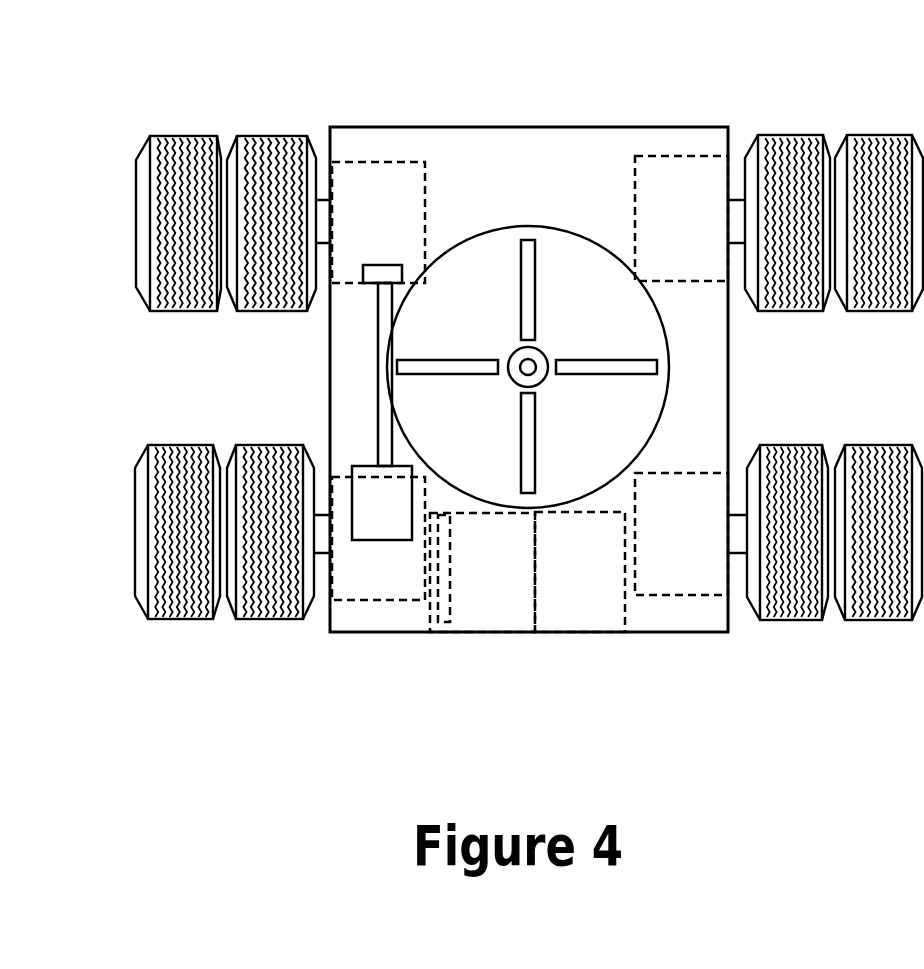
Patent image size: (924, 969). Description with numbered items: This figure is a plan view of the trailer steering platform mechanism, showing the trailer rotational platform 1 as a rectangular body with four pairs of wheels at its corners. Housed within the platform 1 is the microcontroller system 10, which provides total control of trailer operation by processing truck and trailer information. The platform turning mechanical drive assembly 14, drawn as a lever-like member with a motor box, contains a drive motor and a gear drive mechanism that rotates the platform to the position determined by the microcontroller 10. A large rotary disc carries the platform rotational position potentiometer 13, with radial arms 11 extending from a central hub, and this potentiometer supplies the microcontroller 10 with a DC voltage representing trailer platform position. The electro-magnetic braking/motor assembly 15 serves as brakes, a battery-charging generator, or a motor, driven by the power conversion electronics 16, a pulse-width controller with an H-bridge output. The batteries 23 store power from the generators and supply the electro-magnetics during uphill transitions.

The trailer rotational platform 1 is at (485, 163).
The microcontroller system 10 is at (503, 587).
The rotor blades 11 is at (535, 280).
The platform rotational position potentiometer 13 is at (663, 410).
The platform turning mechanical drive assembly 14 is at (383, 497).
The electro-magnetic braking/motor assembly 15 is at (370, 192).
The power conversion electronics 16 is at (445, 603).
The batteries 23 is at (598, 578).